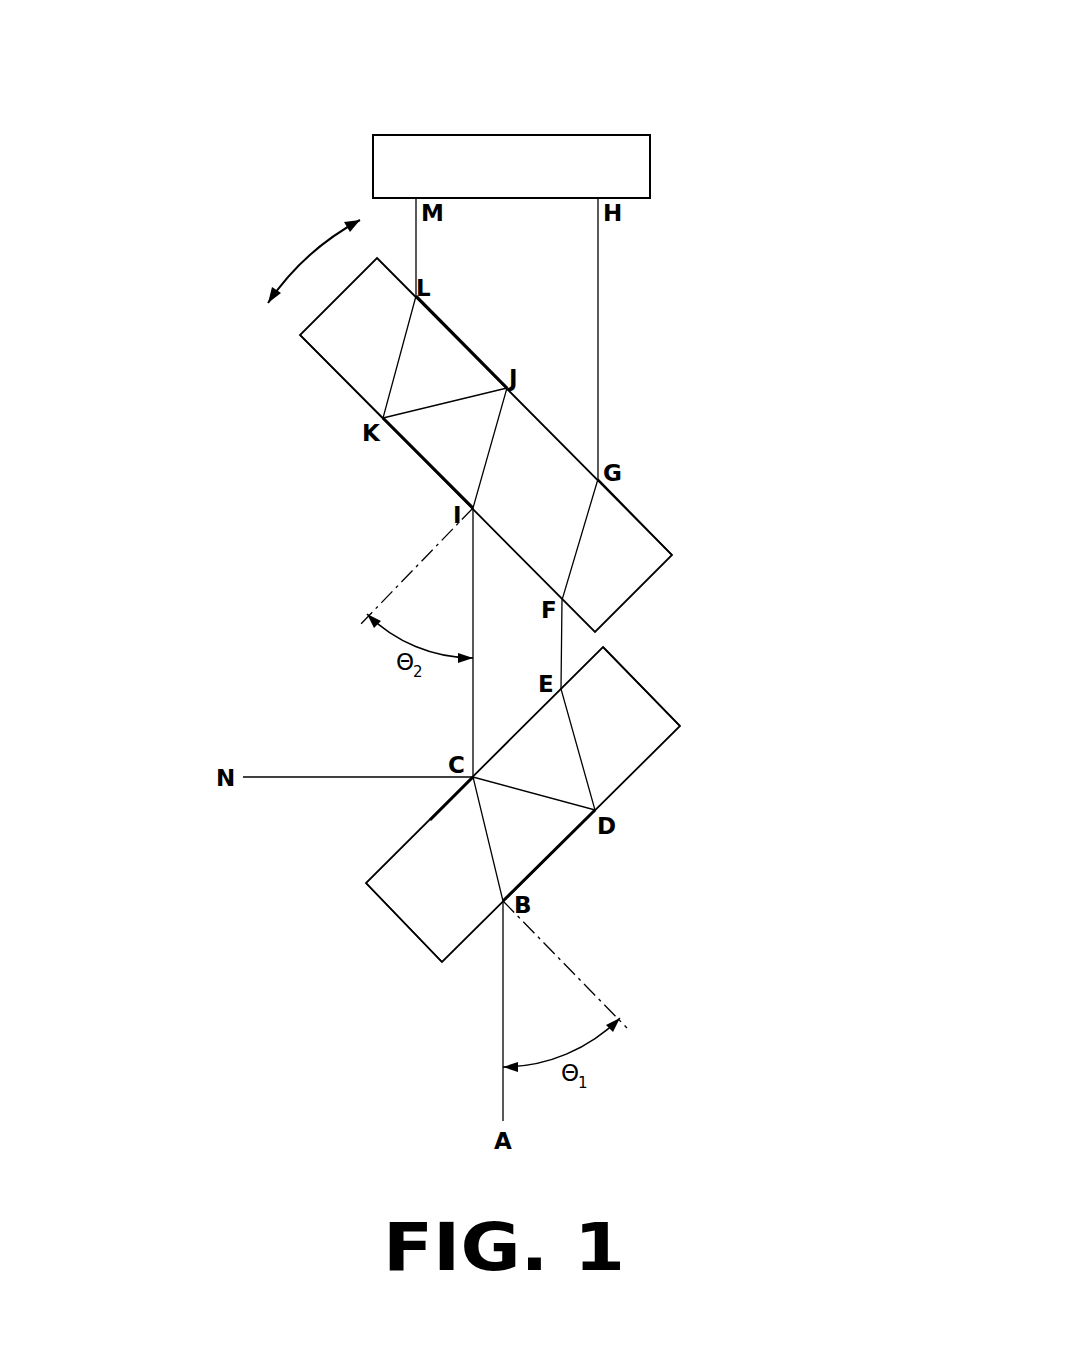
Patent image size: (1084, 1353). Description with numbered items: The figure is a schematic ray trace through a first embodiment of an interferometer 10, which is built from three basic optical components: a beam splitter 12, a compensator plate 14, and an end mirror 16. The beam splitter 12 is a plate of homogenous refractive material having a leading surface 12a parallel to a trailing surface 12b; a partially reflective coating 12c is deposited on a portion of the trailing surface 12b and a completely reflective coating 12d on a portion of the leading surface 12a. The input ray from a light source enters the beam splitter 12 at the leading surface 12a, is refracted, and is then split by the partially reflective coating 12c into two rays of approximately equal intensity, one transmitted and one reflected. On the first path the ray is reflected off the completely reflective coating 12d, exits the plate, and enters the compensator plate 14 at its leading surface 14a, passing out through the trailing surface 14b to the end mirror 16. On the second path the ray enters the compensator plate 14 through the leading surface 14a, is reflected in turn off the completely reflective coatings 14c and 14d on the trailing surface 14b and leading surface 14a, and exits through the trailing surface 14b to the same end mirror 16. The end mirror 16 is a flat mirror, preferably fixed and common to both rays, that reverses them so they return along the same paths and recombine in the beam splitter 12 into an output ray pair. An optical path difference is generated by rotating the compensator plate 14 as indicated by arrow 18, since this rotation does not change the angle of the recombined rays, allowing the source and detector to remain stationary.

The interferometer 10 is at (290, 108).
The beam splitter 12 is at (656, 665).
The leading surface 12a is at (680, 722).
The trailing surface 12b is at (366, 882).
The partially reflective coating 12c is at (452, 797).
The completely reflective coating 12d is at (615, 792).
The compensator plate 14 is at (650, 594).
The leading surface 14a is at (323, 361).
The trailing surface 14b is at (642, 521).
The completely reflective coating 14c is at (481, 357).
The completely reflective coating 14d is at (357, 393).
The end mirror 16 is at (662, 168).
The arrow 18 is at (308, 257).